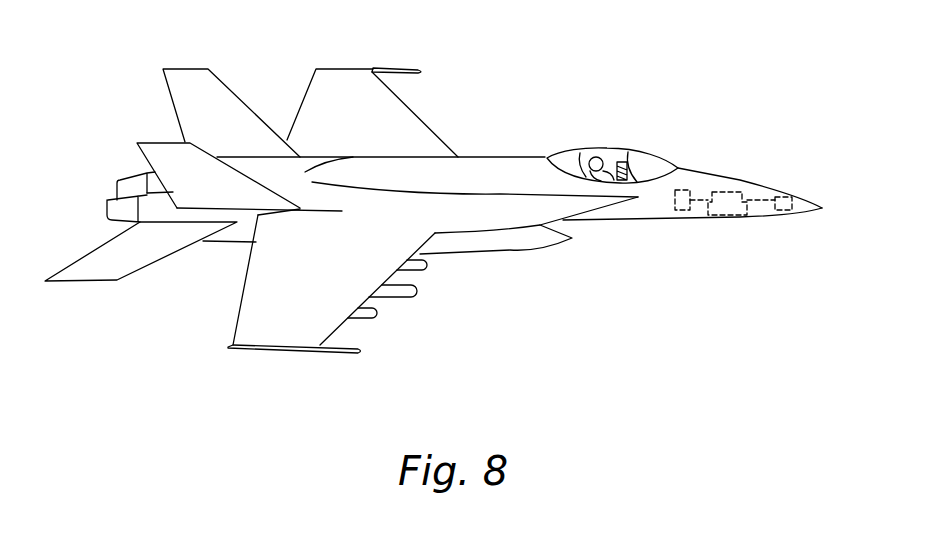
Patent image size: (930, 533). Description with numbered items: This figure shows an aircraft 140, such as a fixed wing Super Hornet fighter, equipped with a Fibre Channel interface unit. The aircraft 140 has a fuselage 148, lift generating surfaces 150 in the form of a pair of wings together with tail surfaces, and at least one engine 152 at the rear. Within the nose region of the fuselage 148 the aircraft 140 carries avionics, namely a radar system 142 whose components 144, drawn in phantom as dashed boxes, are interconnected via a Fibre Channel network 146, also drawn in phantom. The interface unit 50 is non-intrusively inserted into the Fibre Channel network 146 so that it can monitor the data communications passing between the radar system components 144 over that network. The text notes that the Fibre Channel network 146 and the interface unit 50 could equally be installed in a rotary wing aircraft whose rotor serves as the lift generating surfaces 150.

The aircraft 140 is at (450, 197).
The radar system 142 is at (797, 191).
The components 144 is at (686, 172).
The Fibre Channel network 146 is at (731, 172).
The fuselage 148 is at (465, 167).
The lift generating surfaces 150 is at (425, 92).
The engine 152 is at (85, 189).
The interface unit 50 is at (741, 186).